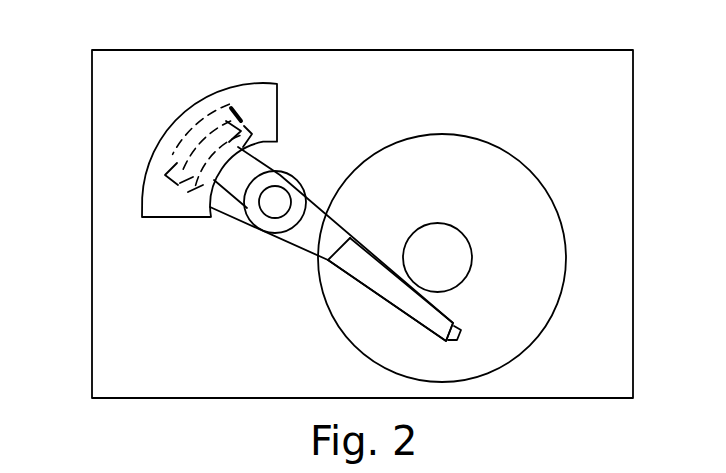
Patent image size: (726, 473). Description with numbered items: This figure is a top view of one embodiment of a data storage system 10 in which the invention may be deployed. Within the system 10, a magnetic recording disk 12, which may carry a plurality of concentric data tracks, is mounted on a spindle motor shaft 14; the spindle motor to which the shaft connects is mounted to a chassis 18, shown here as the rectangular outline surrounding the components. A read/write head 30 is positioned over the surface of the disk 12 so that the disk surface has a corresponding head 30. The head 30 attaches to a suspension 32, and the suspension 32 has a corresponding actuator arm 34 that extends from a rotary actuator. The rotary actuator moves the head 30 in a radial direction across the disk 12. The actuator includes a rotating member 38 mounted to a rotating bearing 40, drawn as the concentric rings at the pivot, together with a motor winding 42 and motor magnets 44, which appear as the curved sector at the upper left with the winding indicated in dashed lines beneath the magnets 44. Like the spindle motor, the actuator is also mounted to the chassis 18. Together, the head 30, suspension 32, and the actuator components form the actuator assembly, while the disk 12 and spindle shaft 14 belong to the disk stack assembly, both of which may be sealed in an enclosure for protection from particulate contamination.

The data storage system 10 is at (92, 35).
The magnetic recording disk 12 is at (422, 150).
The spindle motor shaft 14 is at (452, 240).
The chassis 18 is at (623, 84).
The read/write head 30 is at (462, 338).
The suspension 32 is at (360, 256).
The actuator arm 34 is at (361, 239).
The rotating member 38 is at (267, 226).
The rotating bearing 40 is at (251, 218).
The motor winding 42 is at (169, 168).
The motor magnets 44 is at (267, 104).